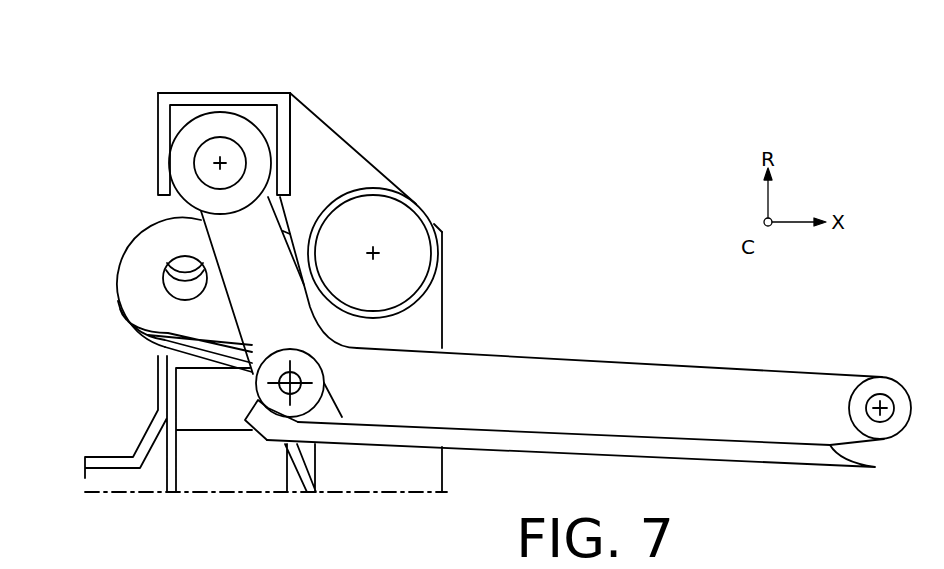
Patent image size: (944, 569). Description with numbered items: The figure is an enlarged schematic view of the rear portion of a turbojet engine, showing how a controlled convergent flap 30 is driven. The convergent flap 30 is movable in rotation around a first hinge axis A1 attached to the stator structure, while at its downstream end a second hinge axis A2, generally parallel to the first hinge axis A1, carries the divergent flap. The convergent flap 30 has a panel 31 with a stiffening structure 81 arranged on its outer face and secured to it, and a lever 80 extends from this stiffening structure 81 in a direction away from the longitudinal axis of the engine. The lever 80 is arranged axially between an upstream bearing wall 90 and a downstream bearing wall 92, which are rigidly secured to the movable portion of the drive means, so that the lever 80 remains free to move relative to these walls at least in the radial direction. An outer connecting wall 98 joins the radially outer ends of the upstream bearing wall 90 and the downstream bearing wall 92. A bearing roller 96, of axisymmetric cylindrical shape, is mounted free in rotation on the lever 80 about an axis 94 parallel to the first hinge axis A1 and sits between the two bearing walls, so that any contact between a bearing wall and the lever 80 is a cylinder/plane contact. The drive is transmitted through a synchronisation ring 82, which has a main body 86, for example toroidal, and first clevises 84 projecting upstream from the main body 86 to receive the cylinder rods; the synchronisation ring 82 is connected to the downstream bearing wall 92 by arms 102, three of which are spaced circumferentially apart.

The convergent flap 30 is at (487, 455).
The panel 31 is at (747, 452).
The lever 80 is at (250, 310).
The stiffening structure 81 is at (662, 405).
The synchronisation ring 82 is at (427, 298).
The first clevis 84 is at (143, 278).
The main body 86 is at (434, 224).
The upstream bearing wall 90 is at (158, 132).
The downstream bearing wall 92 is at (290, 136).
The axis 94 is at (226, 157).
The bearing roller 96 is at (226, 116).
The outer connecting wall 98 is at (192, 93).
The arm 102 is at (335, 157).
The first hinge axis A1 is at (288, 388).
The second hinge axis A2 is at (868, 413).